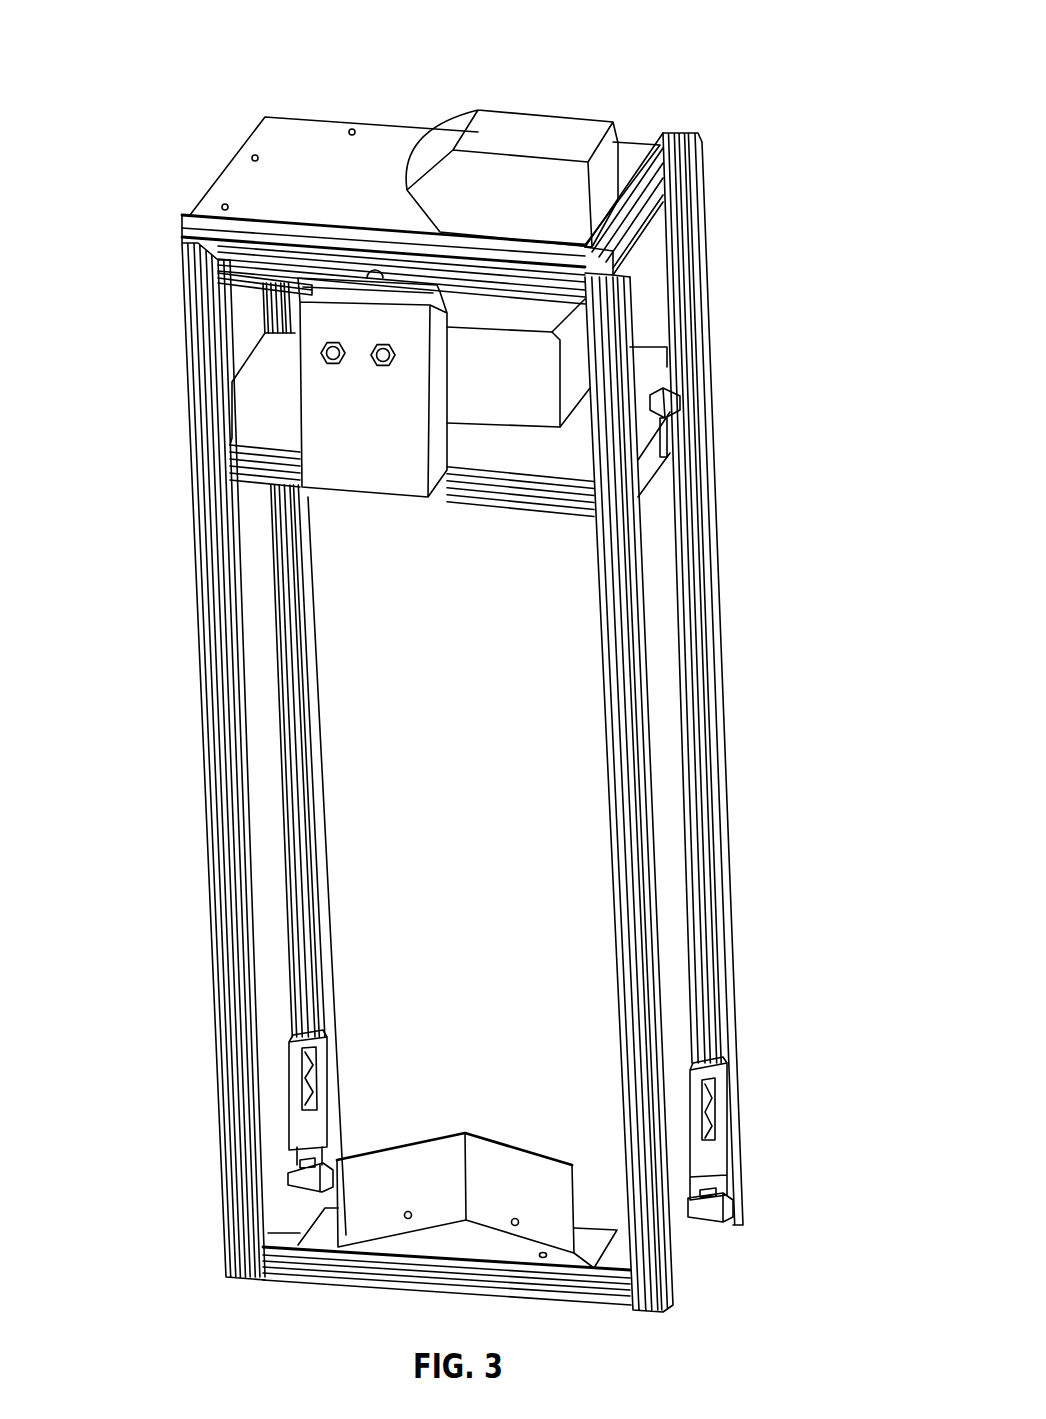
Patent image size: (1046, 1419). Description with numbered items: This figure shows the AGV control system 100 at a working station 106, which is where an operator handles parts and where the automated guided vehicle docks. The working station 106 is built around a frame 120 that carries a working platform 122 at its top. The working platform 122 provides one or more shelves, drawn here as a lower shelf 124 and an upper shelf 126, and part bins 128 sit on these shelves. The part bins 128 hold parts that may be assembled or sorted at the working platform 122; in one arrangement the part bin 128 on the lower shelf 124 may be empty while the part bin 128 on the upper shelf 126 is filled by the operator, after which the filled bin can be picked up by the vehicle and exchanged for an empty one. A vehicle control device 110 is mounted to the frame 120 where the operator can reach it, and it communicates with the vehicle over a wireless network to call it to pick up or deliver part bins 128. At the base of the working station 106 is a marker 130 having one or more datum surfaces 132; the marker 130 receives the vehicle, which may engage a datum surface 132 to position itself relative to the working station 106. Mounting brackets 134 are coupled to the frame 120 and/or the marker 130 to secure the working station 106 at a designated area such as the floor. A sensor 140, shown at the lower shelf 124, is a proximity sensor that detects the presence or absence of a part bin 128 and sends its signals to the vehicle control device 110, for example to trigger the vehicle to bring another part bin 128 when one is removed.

The AGV control system 100 is at (758, 60).
The working station 106 is at (176, 165).
The vehicle control device 110 is at (320, 415).
The frame 120 is at (722, 600).
The working platform 122 is at (322, 118).
The lower shelf 124 is at (253, 388).
The upper shelf 126 is at (393, 147).
The part bin 128 is at (568, 120).
The marker 130 is at (360, 1212).
The datum surface 132 is at (547, 1223).
The mounting bracket 134 is at (300, 1122).
The sensor 140 is at (670, 396).